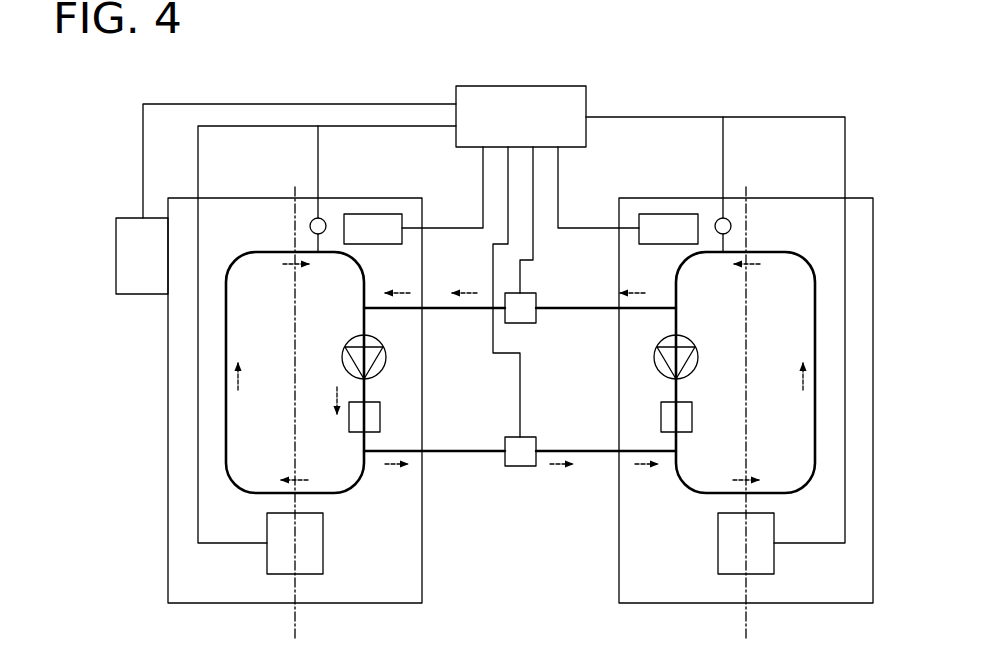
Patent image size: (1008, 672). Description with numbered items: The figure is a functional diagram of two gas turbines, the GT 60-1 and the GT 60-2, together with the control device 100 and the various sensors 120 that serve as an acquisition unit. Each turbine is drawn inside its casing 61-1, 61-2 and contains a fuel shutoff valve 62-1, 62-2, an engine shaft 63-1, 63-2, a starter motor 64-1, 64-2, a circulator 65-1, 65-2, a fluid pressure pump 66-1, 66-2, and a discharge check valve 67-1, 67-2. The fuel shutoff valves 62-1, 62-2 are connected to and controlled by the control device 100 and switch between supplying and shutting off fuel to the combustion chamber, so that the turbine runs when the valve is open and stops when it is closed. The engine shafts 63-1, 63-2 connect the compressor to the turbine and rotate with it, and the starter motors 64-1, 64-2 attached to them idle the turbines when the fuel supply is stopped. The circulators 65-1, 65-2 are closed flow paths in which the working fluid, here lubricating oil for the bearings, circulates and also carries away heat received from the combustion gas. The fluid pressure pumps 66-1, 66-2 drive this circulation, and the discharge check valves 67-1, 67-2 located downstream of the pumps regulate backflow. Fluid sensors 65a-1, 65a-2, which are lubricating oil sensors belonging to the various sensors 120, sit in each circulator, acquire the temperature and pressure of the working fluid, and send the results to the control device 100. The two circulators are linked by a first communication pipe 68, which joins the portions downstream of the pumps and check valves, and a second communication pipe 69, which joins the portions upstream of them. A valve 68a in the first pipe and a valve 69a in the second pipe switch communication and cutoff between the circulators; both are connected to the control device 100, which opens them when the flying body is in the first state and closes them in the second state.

The control device 100 is at (518, 86).
The various sensors 120 is at (135, 294).
The GT 60-1 is at (244, 427).
The GT 60-2 is at (695, 427).
The casing 61-1 is at (391, 603).
The casing 61-2 is at (841, 603).
The fuel shutoff valve 62-1 is at (368, 214).
The fuel shutoff valve 62-2 is at (664, 214).
The engine shaft 63-1 is at (290, 611).
The engine shaft 63-2 is at (741, 611).
The starter motor 64-1 is at (323, 540).
The starter motor 64-2 is at (718, 540).
The circulator 65-1 is at (287, 252).
The circulator 65-2 is at (752, 252).
The fluid sensor 65a-1 is at (314, 216).
The fluid sensor 65a-2 is at (730, 216).
The fluid pressure pump 66-1 is at (388, 355).
The fluid pressure pump 66-2 is at (653, 352).
The discharge check valve 67-1 is at (380, 417).
The discharge check valve 67-2 is at (661, 417).
The first communication pipe 68 is at (458, 452).
The valve 68a is at (518, 466).
The second communication pipe 69 is at (574, 309).
The valve 69a is at (535, 293).